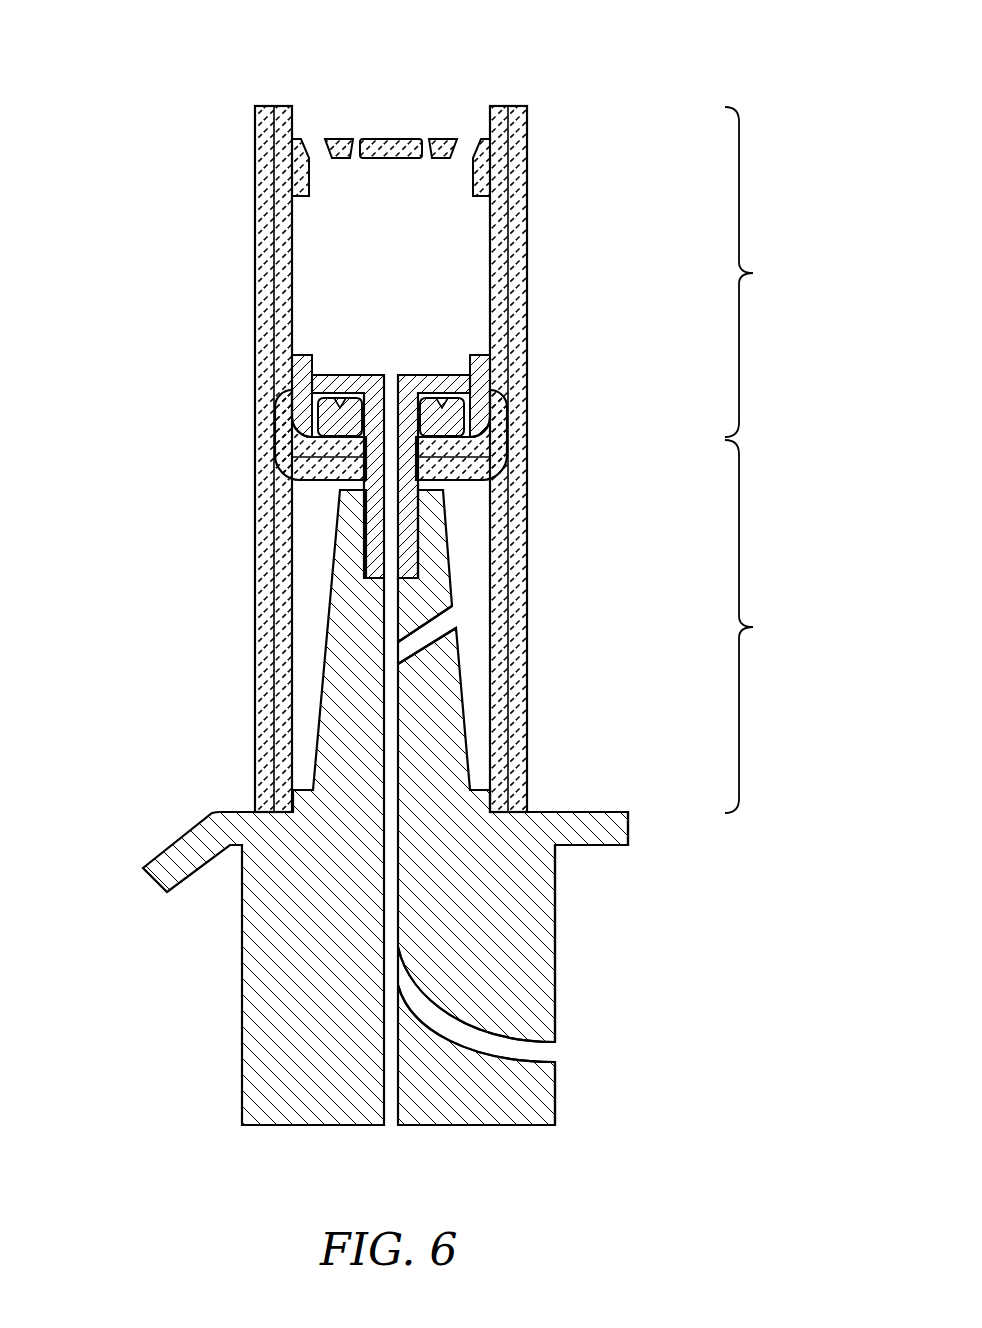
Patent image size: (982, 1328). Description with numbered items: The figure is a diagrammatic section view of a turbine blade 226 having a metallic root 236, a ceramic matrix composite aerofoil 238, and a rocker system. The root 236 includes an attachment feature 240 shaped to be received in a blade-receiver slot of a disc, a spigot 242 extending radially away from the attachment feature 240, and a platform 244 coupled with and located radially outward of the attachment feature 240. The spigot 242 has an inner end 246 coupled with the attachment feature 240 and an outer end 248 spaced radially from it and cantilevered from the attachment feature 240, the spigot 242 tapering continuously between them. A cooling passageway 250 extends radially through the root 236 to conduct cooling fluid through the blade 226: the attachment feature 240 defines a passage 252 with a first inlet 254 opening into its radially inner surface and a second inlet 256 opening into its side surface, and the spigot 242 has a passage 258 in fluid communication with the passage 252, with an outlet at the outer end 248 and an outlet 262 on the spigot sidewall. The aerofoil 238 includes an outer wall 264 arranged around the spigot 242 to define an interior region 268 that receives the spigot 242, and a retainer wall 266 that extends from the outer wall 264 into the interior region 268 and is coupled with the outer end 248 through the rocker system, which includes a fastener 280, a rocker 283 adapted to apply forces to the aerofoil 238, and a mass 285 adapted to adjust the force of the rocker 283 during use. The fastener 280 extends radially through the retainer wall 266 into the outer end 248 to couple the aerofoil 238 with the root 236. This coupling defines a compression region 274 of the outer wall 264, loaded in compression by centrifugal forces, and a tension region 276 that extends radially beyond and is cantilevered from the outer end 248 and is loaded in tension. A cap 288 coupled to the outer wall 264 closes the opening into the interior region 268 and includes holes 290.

The blade 226 is at (148, 111).
The root 236 is at (228, 1002).
The aerofoil 238 is at (249, 476).
The attachment feature 240 is at (564, 929).
The spigot 242 is at (477, 745).
The platform 244 is at (609, 805).
The inner end 246 is at (481, 777).
The outer end 248 is at (456, 497).
The cooling passageway 250 is at (388, 1032).
The passage 252 is at (389, 912).
The first inlet 254 is at (397, 1142).
The second inlet 256 is at (569, 1057).
The passage 258 is at (393, 654).
The outlet 262 is at (460, 612).
The outer wall 264 is at (249, 294).
The retainer wall 266 is at (322, 494).
The interior region 268 is at (487, 648).
The compression region 274 is at (771, 626).
The tension region 276 is at (771, 272).
The fastener 280 is at (441, 359).
The rocker 283 is at (343, 398).
The mass 285 is at (301, 350).
The cap 288 is at (452, 133).
The holes 290 is at (350, 133).